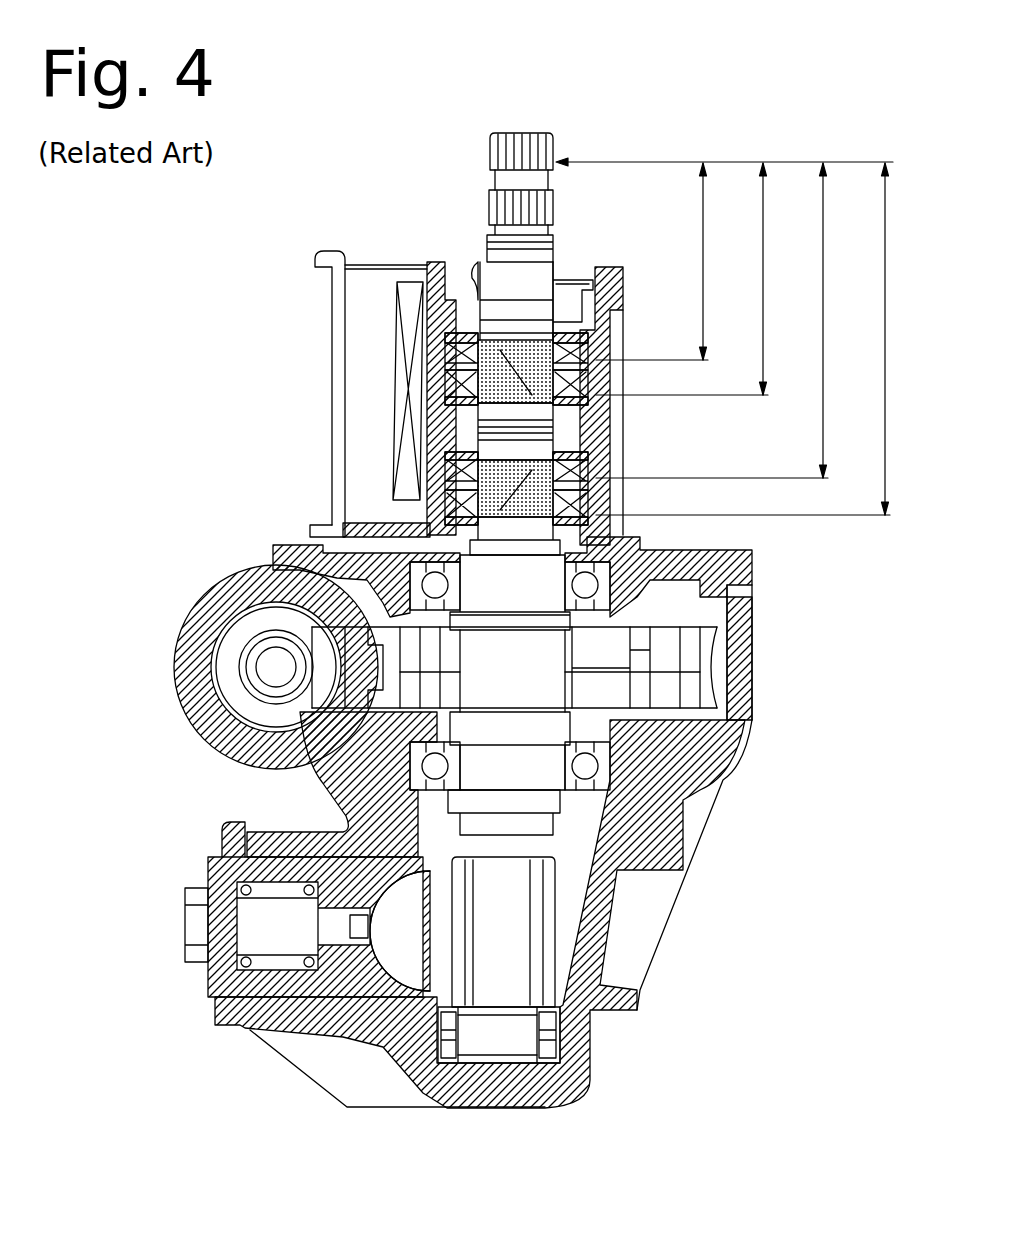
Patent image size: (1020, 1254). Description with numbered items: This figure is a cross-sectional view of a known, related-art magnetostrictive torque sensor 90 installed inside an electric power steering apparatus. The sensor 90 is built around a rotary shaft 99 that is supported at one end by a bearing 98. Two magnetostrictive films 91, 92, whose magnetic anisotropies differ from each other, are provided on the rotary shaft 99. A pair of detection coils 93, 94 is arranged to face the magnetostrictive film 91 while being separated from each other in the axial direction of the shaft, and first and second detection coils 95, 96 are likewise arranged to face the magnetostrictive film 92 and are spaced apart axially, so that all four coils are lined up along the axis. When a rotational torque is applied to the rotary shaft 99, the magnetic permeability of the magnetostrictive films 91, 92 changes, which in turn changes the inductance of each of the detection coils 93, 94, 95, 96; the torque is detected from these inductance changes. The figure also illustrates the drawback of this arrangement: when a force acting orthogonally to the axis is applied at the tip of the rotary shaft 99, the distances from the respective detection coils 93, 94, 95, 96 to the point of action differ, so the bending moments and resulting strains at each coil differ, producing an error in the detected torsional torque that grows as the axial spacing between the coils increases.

The magnetostrictive torque sensor 90 is at (446, 238).
The magnetostrictive film 91 is at (450, 312).
The magnetostrictive film 92 is at (473, 440).
The detection coil 93 is at (447, 350).
The detection coil 94 is at (447, 387).
The first detection coil 95 is at (447, 470).
The second detection coil 96 is at (447, 503).
The bearing 98 is at (745, 572).
The rotary shaft 99 is at (507, 130).